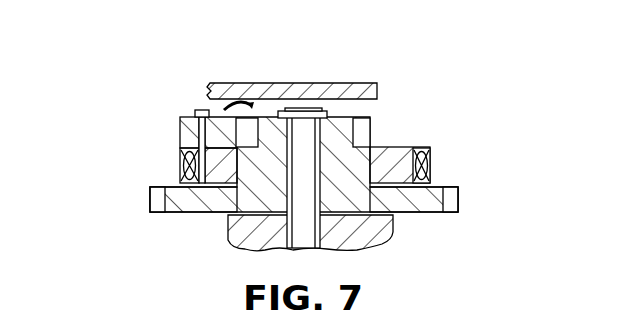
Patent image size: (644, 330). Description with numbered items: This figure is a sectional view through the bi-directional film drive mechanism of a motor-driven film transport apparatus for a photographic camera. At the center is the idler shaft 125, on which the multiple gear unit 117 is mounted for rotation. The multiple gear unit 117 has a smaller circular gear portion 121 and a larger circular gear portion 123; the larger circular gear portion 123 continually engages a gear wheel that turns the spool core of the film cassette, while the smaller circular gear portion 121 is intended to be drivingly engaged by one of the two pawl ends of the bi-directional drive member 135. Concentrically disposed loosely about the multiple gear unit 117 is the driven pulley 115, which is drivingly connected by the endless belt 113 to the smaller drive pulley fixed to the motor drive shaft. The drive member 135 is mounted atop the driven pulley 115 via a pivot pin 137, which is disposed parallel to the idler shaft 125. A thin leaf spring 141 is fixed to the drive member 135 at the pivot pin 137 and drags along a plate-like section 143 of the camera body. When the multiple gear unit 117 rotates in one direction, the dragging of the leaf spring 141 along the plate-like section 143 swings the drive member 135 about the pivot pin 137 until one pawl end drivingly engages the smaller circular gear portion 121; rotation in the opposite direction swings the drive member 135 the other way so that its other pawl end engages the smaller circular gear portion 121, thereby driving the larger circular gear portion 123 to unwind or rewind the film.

The endless belt 113 is at (180, 165).
The driven pulley 115 is at (428, 147).
The multiple gear unit 117 is at (378, 141).
The smaller circular gear portion 121 is at (260, 127).
The larger circular gear portion 123 is at (150, 200).
The idler shaft 125 is at (311, 108).
The bi-directional drive member 135 is at (180, 137).
The pivot pin 137 is at (222, 108).
The leaf spring 141 is at (207, 105).
The plate-like section 143 is at (350, 83).